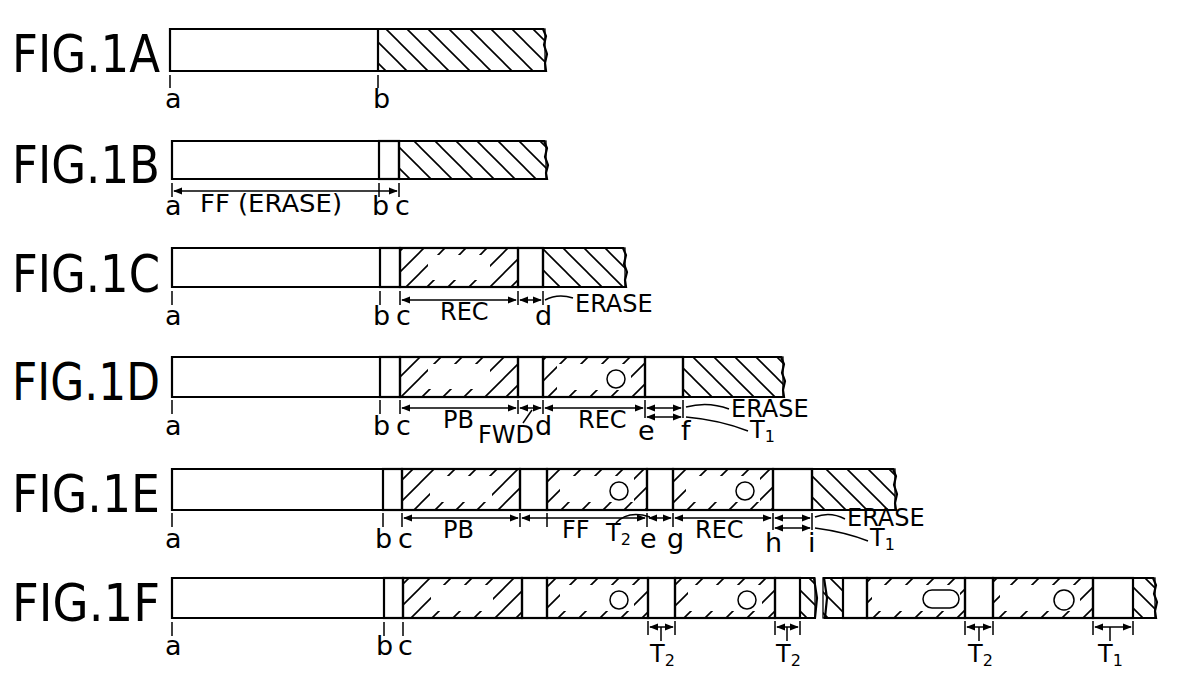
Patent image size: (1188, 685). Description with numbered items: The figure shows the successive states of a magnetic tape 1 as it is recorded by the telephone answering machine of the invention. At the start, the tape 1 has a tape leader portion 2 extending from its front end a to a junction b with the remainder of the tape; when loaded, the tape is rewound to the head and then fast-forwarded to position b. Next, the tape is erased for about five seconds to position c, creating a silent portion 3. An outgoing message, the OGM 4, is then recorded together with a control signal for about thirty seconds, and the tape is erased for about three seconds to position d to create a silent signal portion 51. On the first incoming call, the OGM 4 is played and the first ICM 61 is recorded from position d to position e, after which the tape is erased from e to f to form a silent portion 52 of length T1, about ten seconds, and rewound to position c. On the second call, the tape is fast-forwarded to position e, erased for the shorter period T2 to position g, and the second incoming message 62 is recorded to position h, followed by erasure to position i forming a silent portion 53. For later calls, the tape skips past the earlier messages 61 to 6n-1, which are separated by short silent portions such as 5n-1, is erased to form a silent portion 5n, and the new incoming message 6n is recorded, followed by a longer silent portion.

In FIG. 1A, the magnetic tape 1 is at (414, 21).
In FIG. 1B, the magnetic tape 1 is at (471, 137).
In FIG. 1C, the magnetic tape 1 is at (468, 243).
In FIG. 1D, the magnetic tape 1 is at (448, 353).
In FIG. 1E, the magnetic tape 1 is at (566, 464).
In FIG. 1F, the magnetic tape 1 is at (566, 575).
In FIG. 1A, the tape leader portion 2 is at (242, 42).
In FIG. 1B, the tape leader portion 2 is at (238, 151).
In FIG. 1C, the tape leader portion 2 is at (245, 262).
In FIG. 1D, the tape leader portion 2 is at (245, 370).
In FIG. 1E, the tape leader portion 2 is at (263, 482).
In FIG. 1F, the tape leader portion 2 is at (248, 590).
In FIG. 1B, the silent portion 3 is at (391, 151).
In FIG. 1C, the silent portion 3 is at (389, 258).
In FIG. 1D, the silent portion 3 is at (389, 368).
In FIG. 1E, the silent portion 3 is at (389, 480).
In FIG. 1F, the silent portion 3 is at (393, 592).
In FIG. 1C, the OGM 4 is at (417, 258).
In FIG. 1D, the OGM 4 is at (417, 368).
In FIG. 1E, the OGM 4 is at (417, 480).
In FIG. 1F, the OGM 4 is at (417, 590).
In FIG. 1C, the silent signal portion 51 is at (532, 260).
In FIG. 1D, the silent signal portion 51 is at (532, 370).
In FIG. 1E, the silent signal portion 51 is at (537, 482).
In FIG. 1F, the silent signal portion 51 is at (533, 590).
In FIG. 1D, the silent portion 52 is at (662, 372).
In FIG. 1E, the silent portion 52 is at (660, 482).
In FIG. 1F, the silent portion 52 is at (660, 590).
In FIG. 1E, the silent portion 53 is at (791, 482).
In FIG. 1F, the silent portion 53 is at (789, 590).
In FIG. 1D, the first ICM 61 is at (582, 355).
In FIG. 1E, the first ICM 61 is at (609, 480).
In FIG. 1F, the first ICM 61 is at (611, 590).
In FIG. 1E, the second incoming message 62 is at (718, 480).
In FIG. 1F, the second incoming message 62 is at (719, 590).
In FIG. 1F, the silent portion 5n-1 is at (855, 606).
In FIG. 1F, the incoming message 6n-1 is at (946, 580).
In FIG. 1F, the silent portion 5n is at (981, 590).
In FIG. 1F, the incoming message 6n is at (1040, 580).